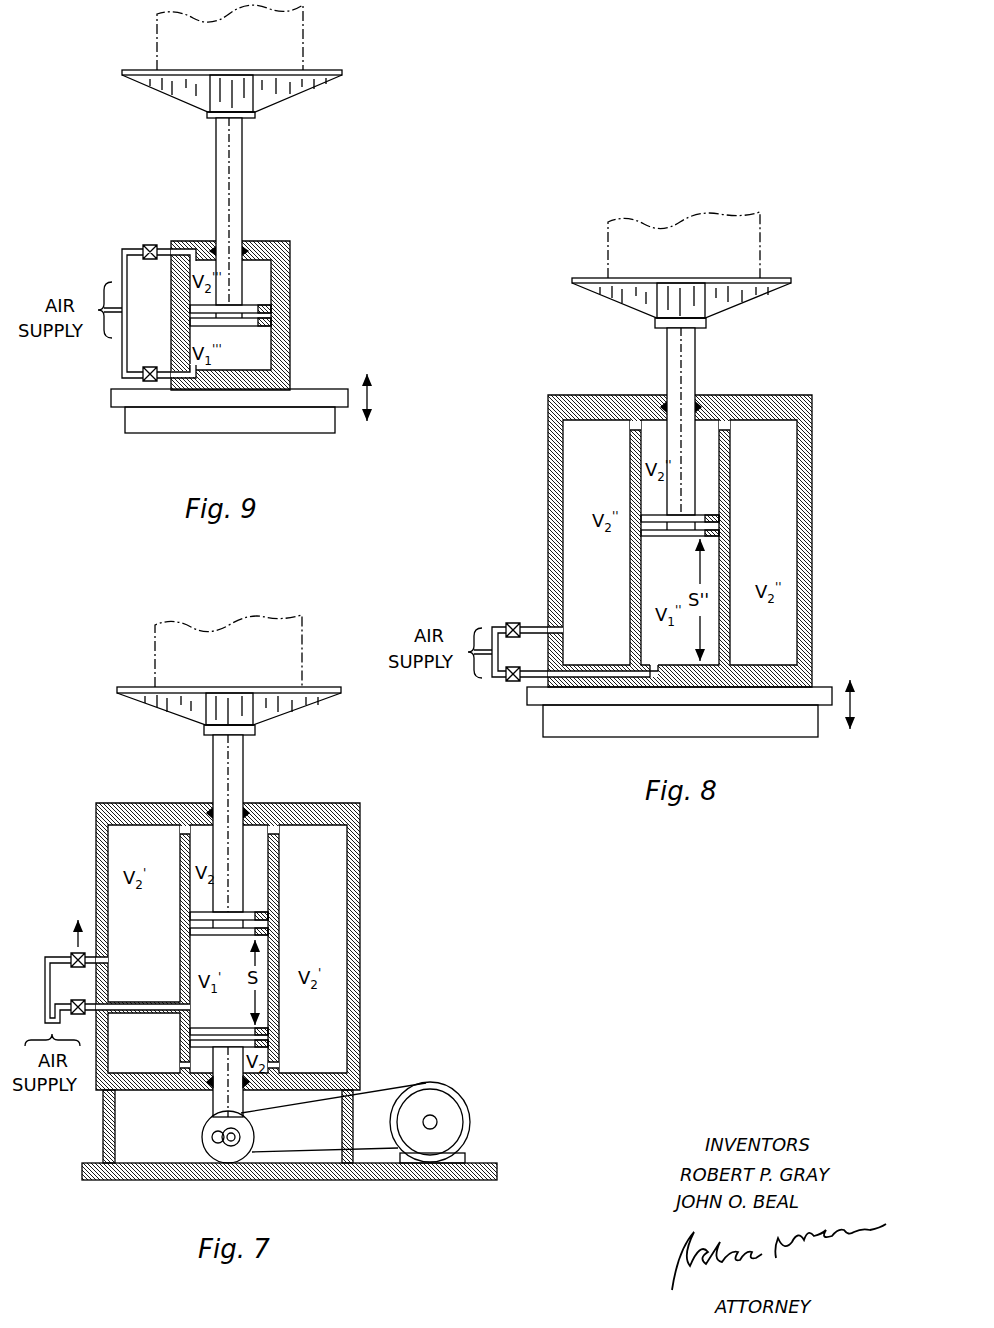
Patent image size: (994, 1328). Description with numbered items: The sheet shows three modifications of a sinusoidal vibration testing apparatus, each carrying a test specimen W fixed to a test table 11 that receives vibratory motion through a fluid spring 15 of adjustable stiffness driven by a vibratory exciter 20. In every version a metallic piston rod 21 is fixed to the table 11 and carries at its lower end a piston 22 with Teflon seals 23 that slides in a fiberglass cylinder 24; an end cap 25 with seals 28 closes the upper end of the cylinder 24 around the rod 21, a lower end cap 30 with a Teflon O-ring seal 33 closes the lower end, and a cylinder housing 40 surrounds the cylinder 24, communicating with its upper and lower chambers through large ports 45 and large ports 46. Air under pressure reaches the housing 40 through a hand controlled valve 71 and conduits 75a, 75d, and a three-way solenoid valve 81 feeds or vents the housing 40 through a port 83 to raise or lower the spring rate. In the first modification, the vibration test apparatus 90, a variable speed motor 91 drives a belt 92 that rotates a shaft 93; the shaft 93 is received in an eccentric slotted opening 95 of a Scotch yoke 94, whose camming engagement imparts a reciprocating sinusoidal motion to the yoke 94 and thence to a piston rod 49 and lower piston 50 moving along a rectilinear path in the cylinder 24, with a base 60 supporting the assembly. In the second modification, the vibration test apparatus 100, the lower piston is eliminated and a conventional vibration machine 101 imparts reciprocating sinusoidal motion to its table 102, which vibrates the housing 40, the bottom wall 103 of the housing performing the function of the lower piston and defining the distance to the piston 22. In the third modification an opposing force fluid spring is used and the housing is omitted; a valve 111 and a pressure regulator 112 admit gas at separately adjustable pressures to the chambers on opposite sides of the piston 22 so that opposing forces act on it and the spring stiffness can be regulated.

In FIG. 9, the test specimen W is at (292, 43).
In FIG. 8, the test specimen W is at (674, 242).
In FIG. 7, the test specimen W is at (154, 663).
In FIG. 9, the test table 11 is at (156, 89).
In FIG. 8, the test table 11 is at (746, 298).
In FIG. 7, the test table 11 is at (148, 703).
In FIG. 9, the fluid spring 15 is at (296, 266).
In FIG. 8, the fluid spring 15 is at (816, 452).
In FIG. 7, the fluid spring 15 is at (364, 952).
In FIG. 7, the vibratory exciter 20 is at (452, 1089).
In FIG. 9, the piston rod 21 is at (224, 190).
In FIG. 8, the piston rod 21 is at (678, 367).
In FIG. 7, the piston rod 21 is at (232, 862).
In FIG. 9, the piston 22 is at (226, 326).
In FIG. 8, the piston 22 is at (670, 538).
In FIG. 7, the piston 22 is at (200, 916).
In FIG. 9, the Teflon o-rings or seals 23 is at (274, 320).
In FIG. 8, the Teflon o-rings or seals 23 is at (728, 521).
In FIG. 7, the Teflon o-rings or seals 23 is at (238, 934).
In FIG. 9, the fiberglass cylinder 24 is at (272, 308).
In FIG. 8, the fiberglass cylinder 24 is at (732, 469).
In FIG. 7, the fiberglass cylinder 24 is at (278, 890).
In FIG. 8, the end cap 25 is at (612, 401).
In FIG. 7, the end cap 25 is at (198, 810).
In FIG. 9, the Teflon o-rings or seals 28 is at (248, 250).
In FIG. 8, the Teflon o-rings or seals 28 is at (702, 404).
In FIG. 7, the Teflon o-rings or seals 28 is at (250, 812).
In FIG. 7, the lower end cap 30 is at (166, 1094).
In FIG. 7, the Teflon O-ring seal 33 is at (259, 1092).
In FIG. 8, the cylinder housing 40 is at (812, 527).
In FIG. 7, the cylinder housing 40 is at (358, 992).
In FIG. 8, the large ports 45 is at (632, 428).
In FIG. 7, the large ports 45 is at (182, 832).
In FIG. 7, the large ports 46 is at (180, 1066).
In FIG. 7, the piston rod 49 is at (190, 1046).
In FIG. 7, the lower piston 50 is at (244, 1033).
In FIG. 7, the base frame 60 is at (104, 1139).
In FIG. 8, the hand controlled valve 71 is at (506, 669).
In FIG. 7, the hand controlled valve 71 is at (72, 1001).
In FIG. 7, the conduits, bends and connectors 75a is at (122, 1006).
In FIG. 8, the air passage 75d is at (567, 668).
In FIG. 8, the three-way solenoid valve 81 is at (518, 624).
In FIG. 7, the three-way solenoid valve 81 is at (72, 956).
In FIG. 8, the port 83 is at (564, 631).
In FIG. 7, the port 83 is at (108, 960).
In FIG. 7, the vibration test apparatus 90 is at (372, 912).
In FIG. 7, the variable speed motor 91 is at (457, 1129).
In FIG. 7, the belt 92 is at (297, 1117).
In FIG. 7, the shaft 93 is at (238, 1152).
In FIG. 7, the Scotch yoke 94 is at (214, 1124).
In FIG. 7, the eccentric slotted opening 95 is at (214, 1139).
In FIG. 8, the vibration test apparatus 100 is at (816, 601).
In FIG. 9, the vibration machine 101 is at (310, 428).
In FIG. 8, the vibration machine 101 is at (798, 738).
In FIG. 9, the table 102 is at (118, 399).
In FIG. 8, the table 102 is at (560, 698).
In FIG. 8, the bottom wall 103 is at (812, 680).
In FIG. 9, the valve 111 is at (151, 244).
In FIG. 9, the pressure regulator 112 is at (152, 368).